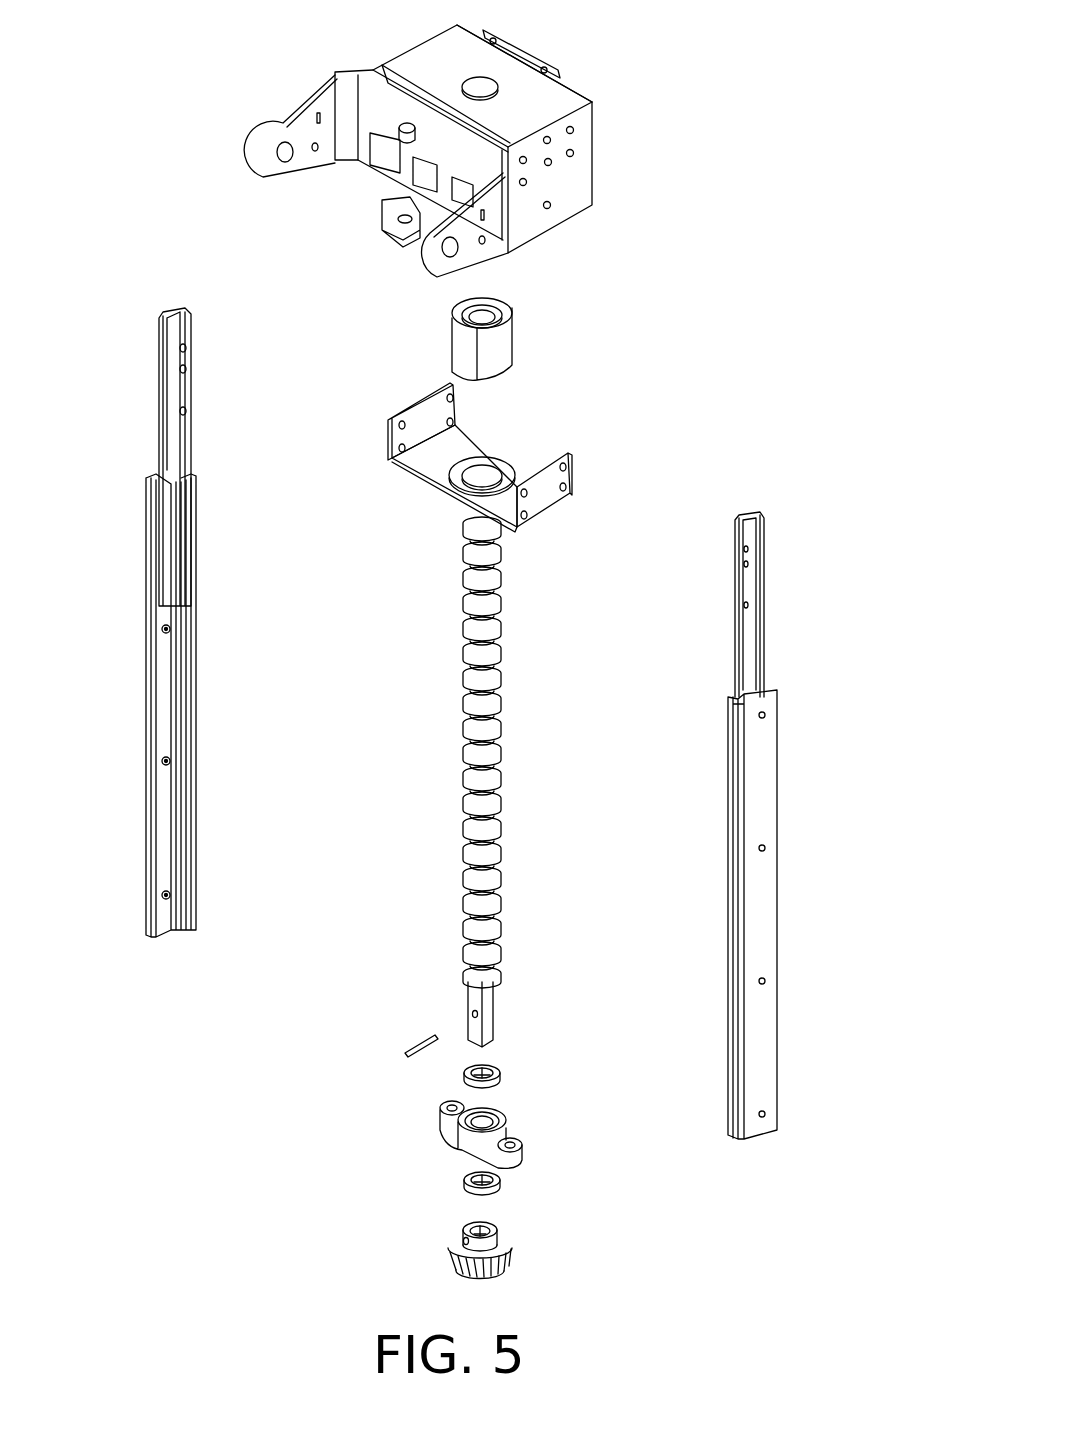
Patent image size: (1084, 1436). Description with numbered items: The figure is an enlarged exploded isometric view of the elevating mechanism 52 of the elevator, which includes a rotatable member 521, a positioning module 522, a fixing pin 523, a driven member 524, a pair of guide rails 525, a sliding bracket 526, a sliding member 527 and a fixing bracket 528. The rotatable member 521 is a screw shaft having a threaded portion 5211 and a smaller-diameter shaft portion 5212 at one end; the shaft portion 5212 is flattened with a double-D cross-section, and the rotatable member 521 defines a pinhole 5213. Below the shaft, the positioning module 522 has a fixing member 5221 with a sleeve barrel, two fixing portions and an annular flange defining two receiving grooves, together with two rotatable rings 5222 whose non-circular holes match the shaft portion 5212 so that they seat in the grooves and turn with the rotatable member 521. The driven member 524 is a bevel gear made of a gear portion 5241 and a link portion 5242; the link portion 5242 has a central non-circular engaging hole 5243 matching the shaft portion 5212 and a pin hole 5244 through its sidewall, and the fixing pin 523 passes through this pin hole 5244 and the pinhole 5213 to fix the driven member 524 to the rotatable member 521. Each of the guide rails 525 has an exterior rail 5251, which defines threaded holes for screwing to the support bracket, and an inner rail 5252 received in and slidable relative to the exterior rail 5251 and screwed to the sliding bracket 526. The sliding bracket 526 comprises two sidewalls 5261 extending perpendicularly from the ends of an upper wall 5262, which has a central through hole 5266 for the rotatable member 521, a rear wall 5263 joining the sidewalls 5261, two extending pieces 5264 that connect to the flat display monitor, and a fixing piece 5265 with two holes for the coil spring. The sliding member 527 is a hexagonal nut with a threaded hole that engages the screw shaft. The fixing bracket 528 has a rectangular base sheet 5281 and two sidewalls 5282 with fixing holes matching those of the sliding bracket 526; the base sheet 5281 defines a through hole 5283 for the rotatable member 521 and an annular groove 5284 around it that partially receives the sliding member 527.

The elevating mechanism 52 is at (190, 88).
The sliding bracket 526 is at (461, 168).
The sidewalls 5261 is at (578, 183).
The upper wall 5262 is at (420, 62).
The rear wall 5263 is at (368, 115).
The extending pieces 5264 is at (450, 267).
The fixing piece 5265 is at (523, 60).
The through hole 5266 is at (483, 90).
The sliding member 527 is at (492, 352).
The fixing bracket 528 is at (483, 473).
The base sheet 5281 is at (420, 465).
The sidewalls 5282 is at (543, 498).
The through hole 5283 is at (483, 477).
The annular groove 5284 is at (458, 480).
The rotatable member 521 is at (504, 782).
The threaded portion 5211 is at (500, 668).
The shaft portion 5212 is at (482, 1030).
The pinhole 5213 is at (470, 1017).
The fixing pin 523 is at (427, 1040).
The positioning module 522 is at (582, 1123).
The fixing member 5221 is at (497, 1132).
The rotatable rings 5222 is at (500, 1083).
The driven member 524 is at (357, 1232).
The gear portion 5241 is at (398, 1302).
The link portion 5242 is at (460, 1257).
The engaging hole 5243 is at (477, 1227).
The pin hole 5244 is at (460, 1235).
The guide rails 525 is at (814, 825).
The exterior rail 5251 is at (764, 1050).
The inner rail 5252 is at (761, 595).